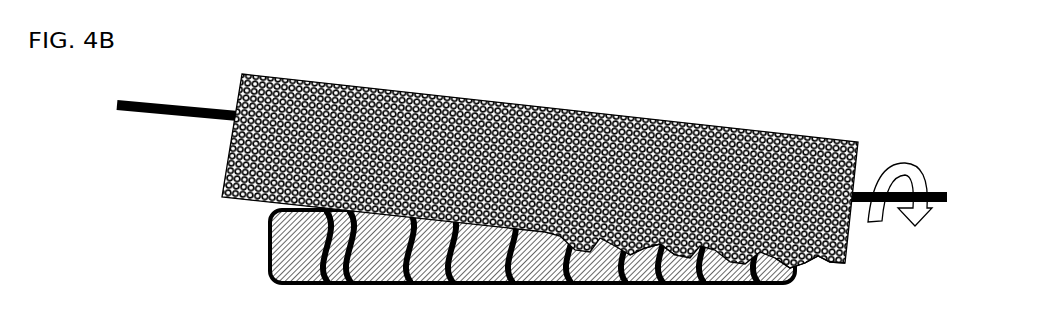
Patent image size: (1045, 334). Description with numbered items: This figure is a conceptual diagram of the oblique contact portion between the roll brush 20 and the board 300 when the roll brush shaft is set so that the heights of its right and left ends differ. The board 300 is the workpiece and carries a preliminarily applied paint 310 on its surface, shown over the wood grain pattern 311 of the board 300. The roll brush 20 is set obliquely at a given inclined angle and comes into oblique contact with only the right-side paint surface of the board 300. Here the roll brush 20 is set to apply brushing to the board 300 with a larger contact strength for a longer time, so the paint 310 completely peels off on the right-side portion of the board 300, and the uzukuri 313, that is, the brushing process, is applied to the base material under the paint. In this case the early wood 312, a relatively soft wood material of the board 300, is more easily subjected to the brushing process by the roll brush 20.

The roll brush 20 is at (532, 169).
The board 300 is at (462, 261).
The paint 310 is at (249, 215).
The wavy stripes 311 is at (542, 271).
The early wood 312 is at (664, 287).
The uzukuri (brushing process) 313 is at (795, 263).